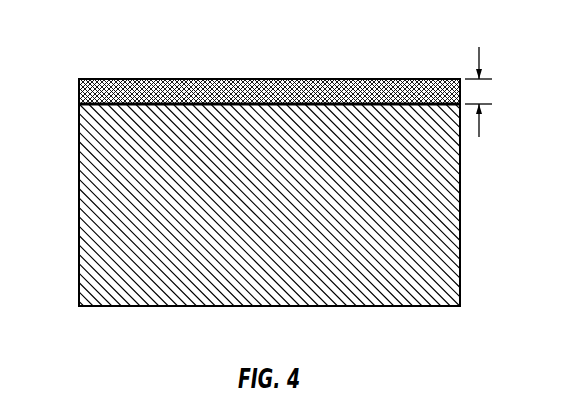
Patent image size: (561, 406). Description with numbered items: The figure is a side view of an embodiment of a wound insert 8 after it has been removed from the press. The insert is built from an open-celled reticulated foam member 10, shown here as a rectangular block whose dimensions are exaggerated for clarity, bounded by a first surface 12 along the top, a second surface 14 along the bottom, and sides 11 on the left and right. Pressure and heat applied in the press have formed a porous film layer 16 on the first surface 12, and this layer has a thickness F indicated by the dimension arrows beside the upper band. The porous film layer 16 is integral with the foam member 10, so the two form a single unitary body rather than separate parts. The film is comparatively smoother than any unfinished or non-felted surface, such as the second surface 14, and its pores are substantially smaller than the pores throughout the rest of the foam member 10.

The coated article 8 is at (78, 328).
The open-celled reticulated foam member 10 is at (281, 202).
The sides 11 is at (79, 212).
The first surface 12 is at (322, 52).
The second surface 14 is at (377, 306).
The porous film layer 16 is at (79, 92).
The thickness F is at (486, 92).